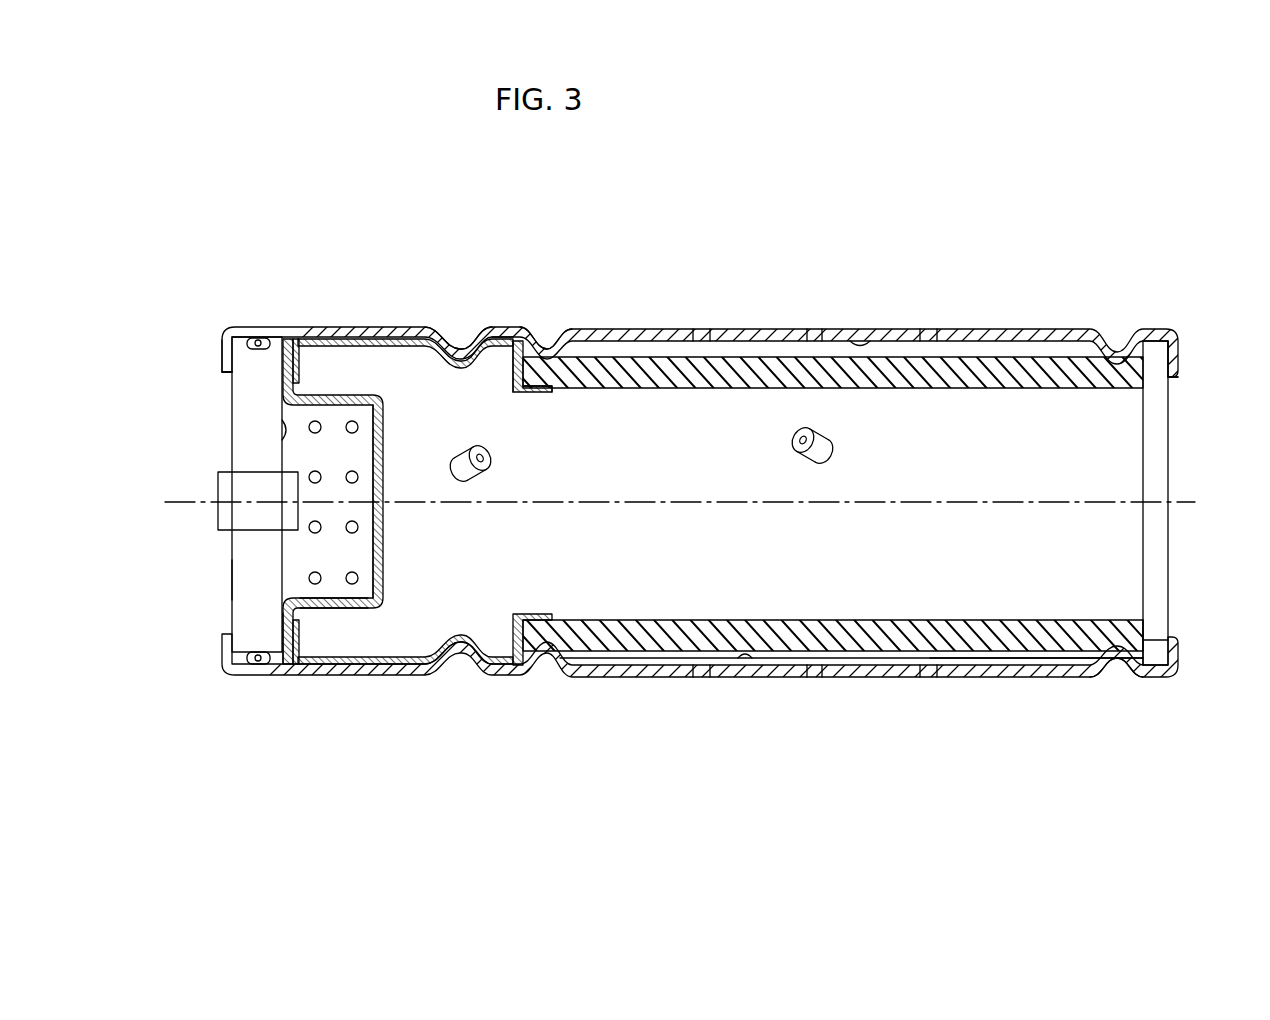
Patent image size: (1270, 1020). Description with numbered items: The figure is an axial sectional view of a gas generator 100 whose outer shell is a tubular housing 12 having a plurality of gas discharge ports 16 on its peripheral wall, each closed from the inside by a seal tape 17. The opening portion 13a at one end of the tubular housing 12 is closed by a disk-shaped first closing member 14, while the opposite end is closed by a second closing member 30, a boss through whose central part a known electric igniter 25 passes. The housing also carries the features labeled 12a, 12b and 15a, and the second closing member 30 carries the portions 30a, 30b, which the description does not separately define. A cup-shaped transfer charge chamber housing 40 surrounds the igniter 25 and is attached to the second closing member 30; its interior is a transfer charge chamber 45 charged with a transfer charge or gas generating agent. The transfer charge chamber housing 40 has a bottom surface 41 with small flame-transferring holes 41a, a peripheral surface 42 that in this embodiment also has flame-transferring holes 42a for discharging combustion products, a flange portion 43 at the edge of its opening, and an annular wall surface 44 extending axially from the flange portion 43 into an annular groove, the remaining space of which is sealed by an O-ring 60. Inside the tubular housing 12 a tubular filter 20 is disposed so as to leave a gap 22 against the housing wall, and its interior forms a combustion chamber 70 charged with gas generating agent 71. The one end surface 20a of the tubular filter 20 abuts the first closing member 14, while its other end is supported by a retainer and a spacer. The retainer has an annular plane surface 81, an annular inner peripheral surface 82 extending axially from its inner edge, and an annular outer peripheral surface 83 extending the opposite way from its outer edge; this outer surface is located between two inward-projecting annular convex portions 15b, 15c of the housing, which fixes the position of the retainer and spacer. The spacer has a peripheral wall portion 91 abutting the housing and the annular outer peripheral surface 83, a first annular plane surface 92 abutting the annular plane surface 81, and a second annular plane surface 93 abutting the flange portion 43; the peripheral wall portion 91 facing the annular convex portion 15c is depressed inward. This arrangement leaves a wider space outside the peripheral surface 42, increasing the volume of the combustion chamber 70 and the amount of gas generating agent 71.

The gas generator 100 is at (712, 306).
The tubular housing 12 is at (1000, 330).
The bottom wall of outer can 12a is at (1180, 347).
The opening end of outer can 12b is at (222, 352).
The opening portion 13a is at (232, 374).
The first closing member 14 is at (1158, 524).
The groove 15a is at (1124, 678).
The annular convex portion 15b is at (548, 345).
The annular convex portion 15c is at (462, 344).
The gas discharge ports 16 is at (815, 342).
The seal tape 17 is at (862, 344).
The tubular filter 20 is at (1024, 652).
The one end surface of the tubular filter 20a is at (1150, 640).
The gap 22 is at (968, 660).
The electric igniter 25 is at (295, 492).
The second closing member 30 is at (260, 600).
The lid upper portion 30a is at (282, 432).
The lid lower portion 30b is at (232, 582).
The transfer charge chamber housing 40 is at (390, 526).
The bottom surface 41 is at (385, 492).
The flame-transferring holes 41a is at (385, 428).
The peripheral surface 42 is at (330, 610).
The flame-transferring holes 42a is at (355, 609).
The flange portion 43 is at (293, 660).
The annular wall surface 44 is at (262, 666).
The transfer charge chamber 45 is at (333, 447).
The O-ring 60 is at (258, 337).
The combustion chamber 70 is at (831, 504).
The gas generating agent 71 is at (845, 446).
The annular plane surface 81 is at (535, 340).
The annular inner peripheral surface 82 is at (538, 393).
The annular outer peripheral surface 83 is at (504, 338).
The peripheral wall portion 91 is at (382, 348).
The first annular plane surface 92 is at (513, 370).
The second annular plane surface 93 is at (300, 368).